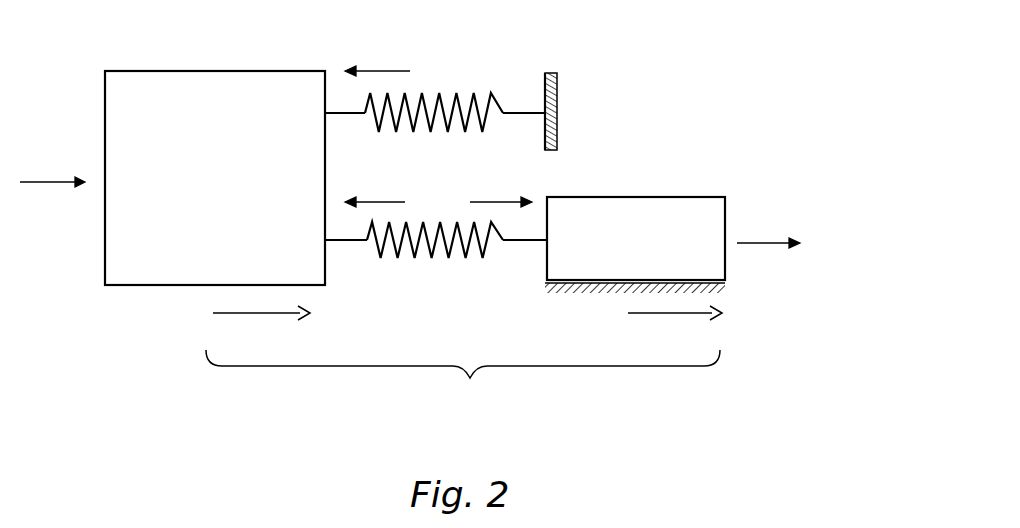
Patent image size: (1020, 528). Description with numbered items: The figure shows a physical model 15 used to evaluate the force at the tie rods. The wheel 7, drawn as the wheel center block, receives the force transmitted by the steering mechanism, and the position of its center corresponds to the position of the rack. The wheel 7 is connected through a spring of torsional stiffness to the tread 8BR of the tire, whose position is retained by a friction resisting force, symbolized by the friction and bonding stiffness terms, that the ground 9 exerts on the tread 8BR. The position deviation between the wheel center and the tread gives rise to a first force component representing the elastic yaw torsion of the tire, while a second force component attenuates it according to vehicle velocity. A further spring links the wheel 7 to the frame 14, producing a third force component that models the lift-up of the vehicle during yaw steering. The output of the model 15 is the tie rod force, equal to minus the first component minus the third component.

The wheel 7 is at (168, 71).
The frame 14 is at (553, 83).
The model 15 is at (712, 70).
The tread 8BR is at (660, 197).
The ground 9 is at (716, 290).